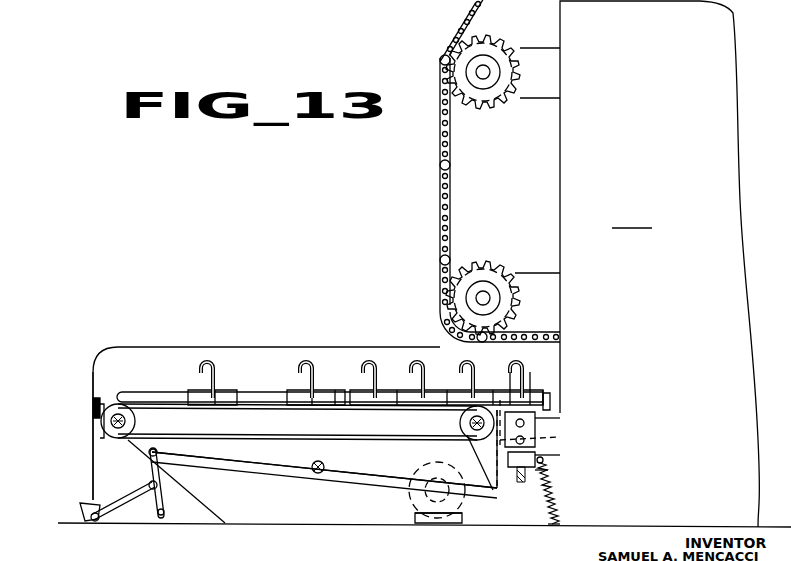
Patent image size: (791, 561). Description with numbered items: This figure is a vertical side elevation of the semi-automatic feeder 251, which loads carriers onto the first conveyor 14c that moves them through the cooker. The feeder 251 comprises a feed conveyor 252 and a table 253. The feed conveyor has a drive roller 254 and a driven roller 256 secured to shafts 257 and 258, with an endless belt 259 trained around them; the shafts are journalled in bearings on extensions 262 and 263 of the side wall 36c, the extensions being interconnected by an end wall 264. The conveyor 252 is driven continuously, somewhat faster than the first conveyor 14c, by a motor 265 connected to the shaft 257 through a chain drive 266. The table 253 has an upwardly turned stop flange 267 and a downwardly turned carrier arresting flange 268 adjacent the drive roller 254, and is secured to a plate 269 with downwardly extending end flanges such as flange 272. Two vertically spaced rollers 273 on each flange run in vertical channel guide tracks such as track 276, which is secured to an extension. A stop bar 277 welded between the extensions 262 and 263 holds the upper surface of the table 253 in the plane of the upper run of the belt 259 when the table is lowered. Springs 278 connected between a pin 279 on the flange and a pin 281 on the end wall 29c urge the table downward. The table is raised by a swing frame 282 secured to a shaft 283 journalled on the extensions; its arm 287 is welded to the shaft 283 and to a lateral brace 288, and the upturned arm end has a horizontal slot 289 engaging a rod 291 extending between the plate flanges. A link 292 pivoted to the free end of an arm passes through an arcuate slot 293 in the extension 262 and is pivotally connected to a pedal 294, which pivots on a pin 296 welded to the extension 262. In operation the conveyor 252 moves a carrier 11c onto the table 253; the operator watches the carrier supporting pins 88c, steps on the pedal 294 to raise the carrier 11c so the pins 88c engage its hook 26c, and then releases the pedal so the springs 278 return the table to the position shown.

The carrier 11c is at (193, 380).
The first conveyor 14c is at (438, 148).
The hook 26c is at (467, 358).
The end wall 29c is at (562, 175).
The side wall 36c is at (632, 215).
The carrier supporting pins 88c is at (447, 253).
The semi-automatic feeder 251 is at (158, 338).
The feed conveyor 252 is at (113, 397).
The table 253 is at (548, 410).
The drive roller 254 is at (468, 412).
The driven roller 256 is at (100, 424).
The shaft 257 is at (460, 425).
The shaft 258 is at (135, 421).
The endless belt 259 is at (290, 433).
The extension 262 is at (197, 518).
The extension 263 is at (107, 358).
The end wall 264 is at (94, 408).
The motor 265 is at (418, 482).
The chain drive 266 is at (446, 447).
The stop flange 267 is at (550, 397).
The carrier arresting flange 268 is at (490, 495).
The plate 269 is at (540, 418).
The end flange 272 is at (548, 428).
The rollers 273 is at (545, 437).
The channel guide track 276 is at (540, 380).
The stop bar 277 is at (518, 470).
The springs 278 is at (556, 513).
The pin 279 is at (548, 470).
The pin 281 is at (553, 524).
The swing frame 282 is at (218, 463).
The shaft 283 is at (318, 474).
The arm 287 is at (340, 472).
The lateral brace 288 is at (480, 495).
The horizontal slots 289 is at (540, 455).
The rod 291 is at (545, 460).
The link 292 is at (148, 463).
The arcuate slot 293 is at (160, 516).
The pedal 294 is at (110, 500).
The pin 296 is at (95, 521).